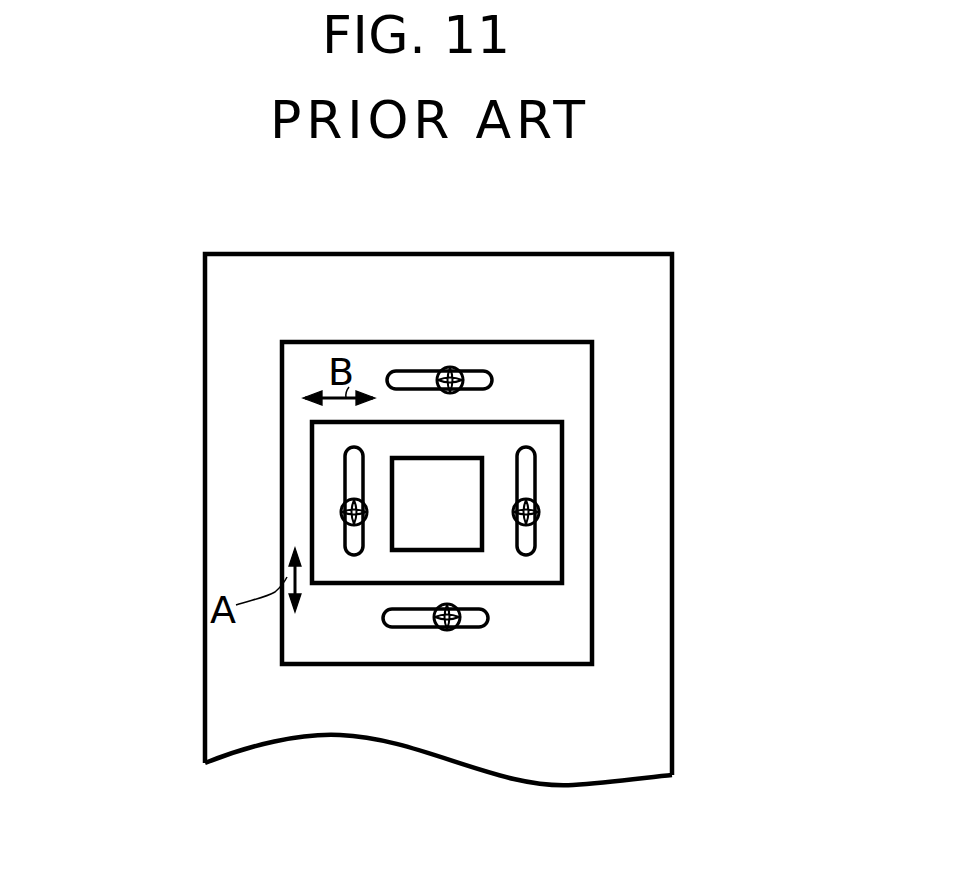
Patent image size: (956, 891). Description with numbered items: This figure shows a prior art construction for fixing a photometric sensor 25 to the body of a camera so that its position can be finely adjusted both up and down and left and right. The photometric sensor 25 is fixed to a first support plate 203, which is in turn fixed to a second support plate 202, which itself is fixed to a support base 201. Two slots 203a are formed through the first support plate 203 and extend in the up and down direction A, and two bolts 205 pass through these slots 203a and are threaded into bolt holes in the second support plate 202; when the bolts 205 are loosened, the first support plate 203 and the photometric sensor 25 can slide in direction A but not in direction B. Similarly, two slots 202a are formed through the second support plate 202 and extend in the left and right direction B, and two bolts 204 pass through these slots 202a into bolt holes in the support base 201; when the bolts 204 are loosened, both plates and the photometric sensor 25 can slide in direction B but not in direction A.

The support base 201 is at (643, 295).
The second support plate 202 is at (560, 387).
The slots 202a is at (413, 368).
The first support plate 203 is at (548, 496).
The slots 203a is at (352, 463).
The bolts 204 is at (448, 370).
The bolts 205 is at (342, 510).
The photometric sensor 25 is at (404, 533).